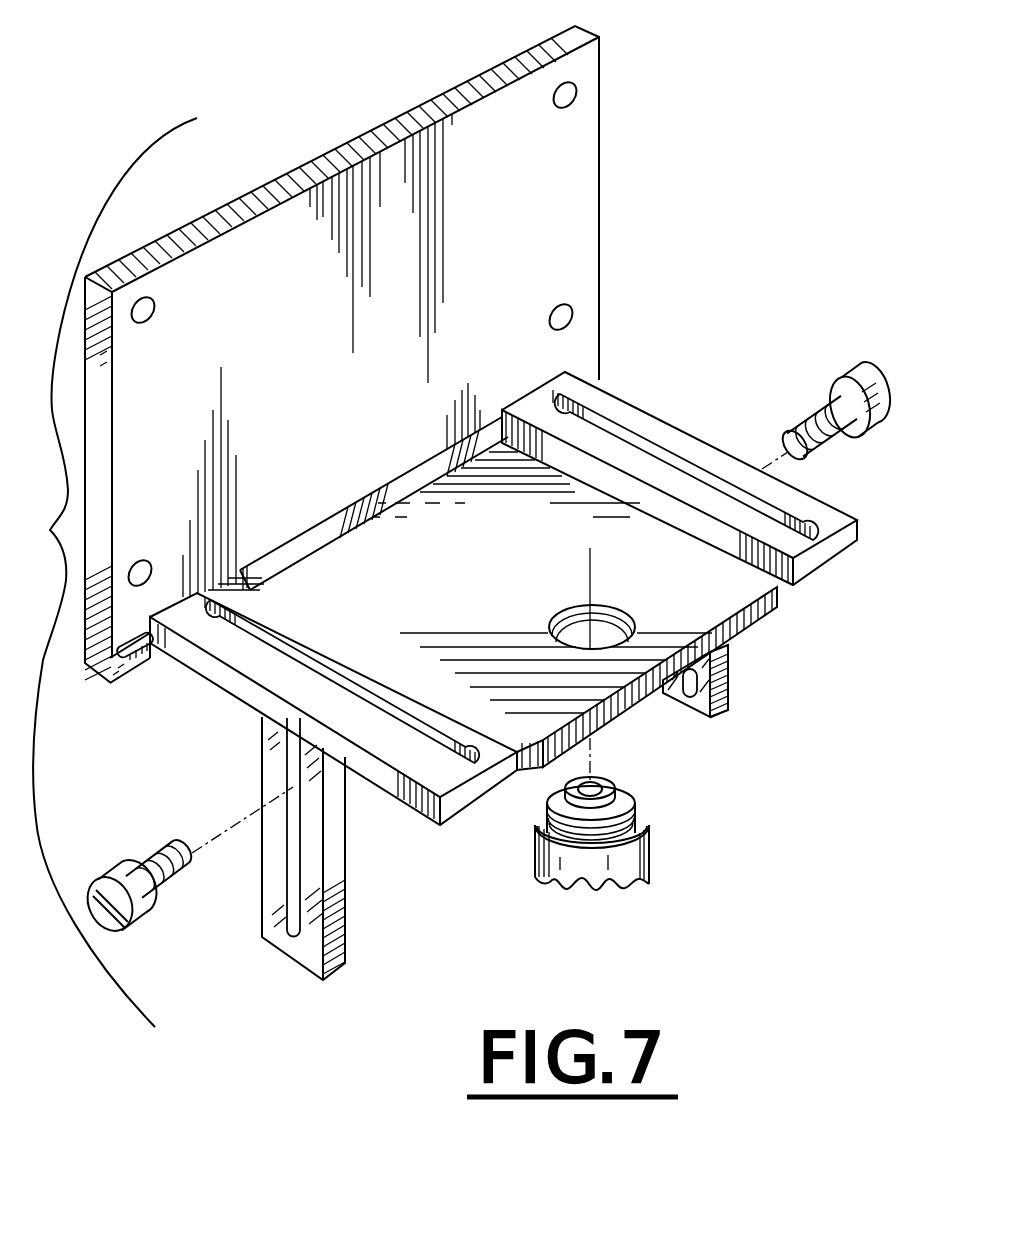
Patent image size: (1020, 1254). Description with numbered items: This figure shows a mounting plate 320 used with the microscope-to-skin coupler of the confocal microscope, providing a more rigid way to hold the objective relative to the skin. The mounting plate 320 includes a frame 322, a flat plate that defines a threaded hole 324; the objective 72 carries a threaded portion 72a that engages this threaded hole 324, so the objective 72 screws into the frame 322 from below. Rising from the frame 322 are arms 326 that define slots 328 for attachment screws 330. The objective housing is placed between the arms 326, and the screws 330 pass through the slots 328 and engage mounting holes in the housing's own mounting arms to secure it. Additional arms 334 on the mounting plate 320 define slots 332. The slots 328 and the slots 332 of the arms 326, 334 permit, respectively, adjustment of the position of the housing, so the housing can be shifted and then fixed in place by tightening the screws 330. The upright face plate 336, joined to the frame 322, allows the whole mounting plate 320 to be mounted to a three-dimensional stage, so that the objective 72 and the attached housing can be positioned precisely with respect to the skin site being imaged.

The mounting plate 320 is at (658, 252).
The frame 322 is at (525, 528).
The threaded hole 324 is at (592, 610).
The arms 326 is at (708, 720).
The slots 328 is at (727, 670).
The attachment screws 330 is at (830, 395).
The slots 332 is at (678, 445).
The arms 334 is at (620, 402).
The face plate 336 is at (590, 175).
The objective 72 is at (630, 863).
The threaded portion 72a is at (633, 787).